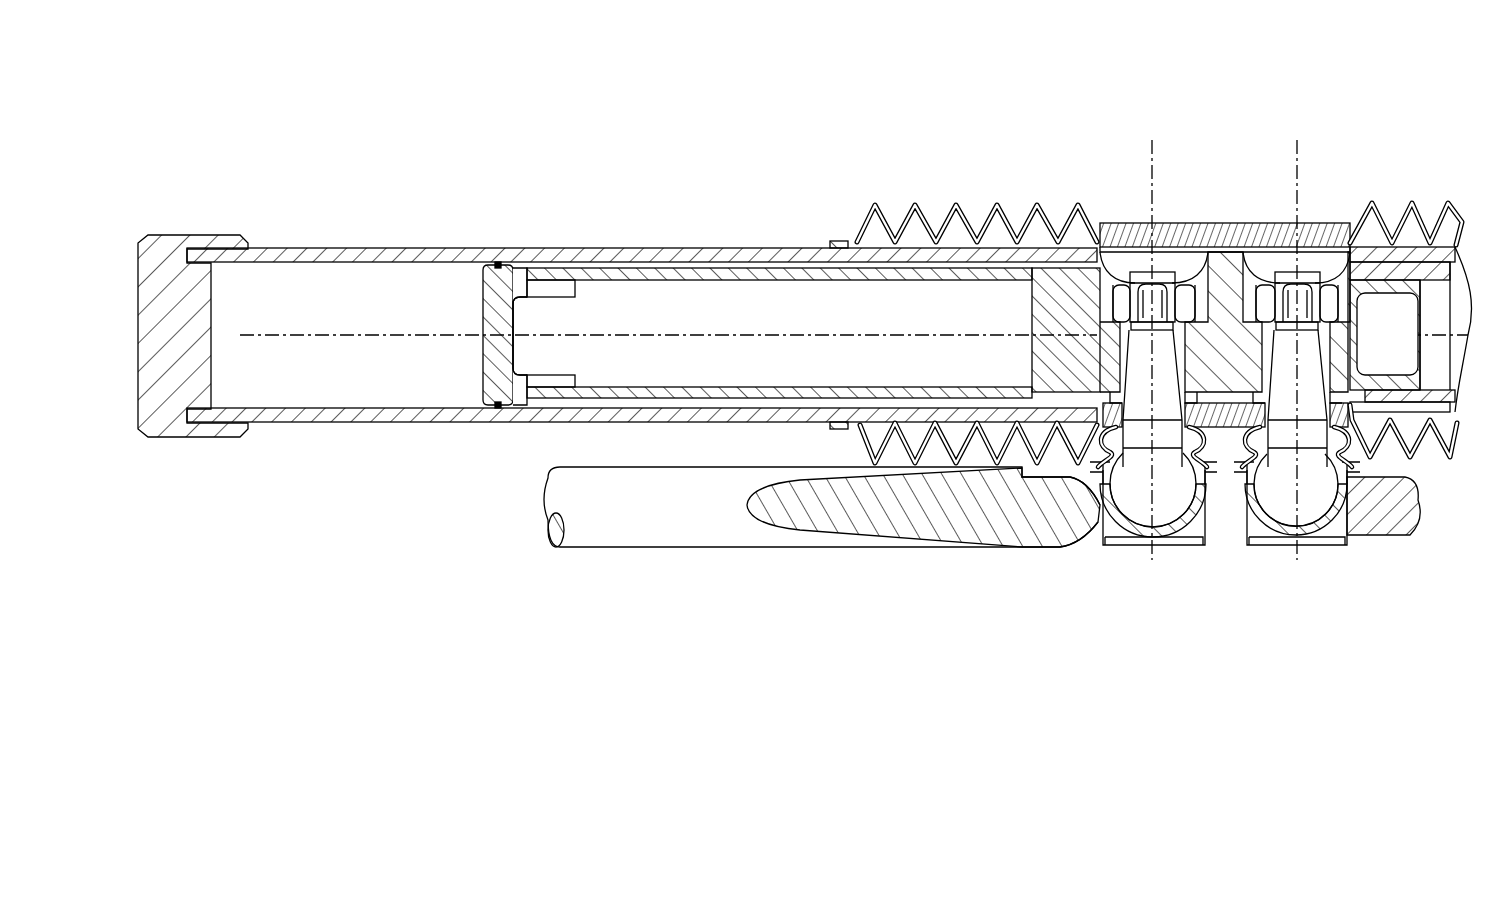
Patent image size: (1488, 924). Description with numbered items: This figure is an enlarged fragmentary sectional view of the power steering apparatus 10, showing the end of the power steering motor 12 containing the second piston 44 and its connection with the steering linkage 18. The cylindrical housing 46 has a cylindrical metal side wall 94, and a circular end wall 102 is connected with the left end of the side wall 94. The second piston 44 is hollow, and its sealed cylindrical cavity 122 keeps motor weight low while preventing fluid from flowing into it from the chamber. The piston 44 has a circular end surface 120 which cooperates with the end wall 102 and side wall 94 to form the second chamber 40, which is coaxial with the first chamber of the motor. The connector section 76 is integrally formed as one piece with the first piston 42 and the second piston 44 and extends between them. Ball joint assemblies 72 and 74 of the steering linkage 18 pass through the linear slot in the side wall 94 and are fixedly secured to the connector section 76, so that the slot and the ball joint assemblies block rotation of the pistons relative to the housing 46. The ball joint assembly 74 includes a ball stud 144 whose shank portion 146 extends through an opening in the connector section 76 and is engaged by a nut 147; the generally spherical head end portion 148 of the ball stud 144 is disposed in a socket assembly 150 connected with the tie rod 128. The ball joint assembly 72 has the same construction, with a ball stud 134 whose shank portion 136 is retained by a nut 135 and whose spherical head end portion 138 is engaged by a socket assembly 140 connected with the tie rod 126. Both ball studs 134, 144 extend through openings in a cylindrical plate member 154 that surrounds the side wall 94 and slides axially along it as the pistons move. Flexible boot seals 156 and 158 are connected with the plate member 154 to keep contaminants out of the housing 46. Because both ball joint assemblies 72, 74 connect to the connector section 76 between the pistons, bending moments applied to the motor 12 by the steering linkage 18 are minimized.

The power steering apparatus 10 is at (1080, 108).
The power steering motor 12 is at (711, 165).
The flexible boot seal 158 is at (857, 242).
The nut 147 is at (1117, 228).
The shank portion 146 is at (1165, 228).
The connector section 76 is at (1225, 312).
The shank portion 136 is at (1312, 278).
The nut 135 is at (1270, 300).
The flexible boot seal 156 is at (1375, 207).
The first piston 42 is at (1432, 250).
The circular end wall 102 is at (163, 250).
The housing 46 is at (291, 248).
The cylindrical side wall 94 is at (377, 258).
The second piston 44 is at (667, 258).
The cylindrical cavity 122 is at (768, 315).
The second chamber 40 is at (282, 373).
The circular end surface 120 is at (476, 370).
The cylindrical plate member 154 is at (1232, 407).
The tie rod 128 is at (628, 527).
The steering linkage 18 is at (755, 547).
The ball stud 144 is at (1110, 520).
The ball joint assembly 74 is at (1120, 570).
The spherical head end portion 148 is at (1167, 500).
The socket assembly 150 is at (1210, 543).
The ball stud 134 is at (1262, 540).
The ball joint assembly 72 is at (1309, 552).
The spherical head end portion 138 is at (1340, 540).
The socket assembly 140 is at (1358, 538).
The tie rod 126 is at (1408, 538).